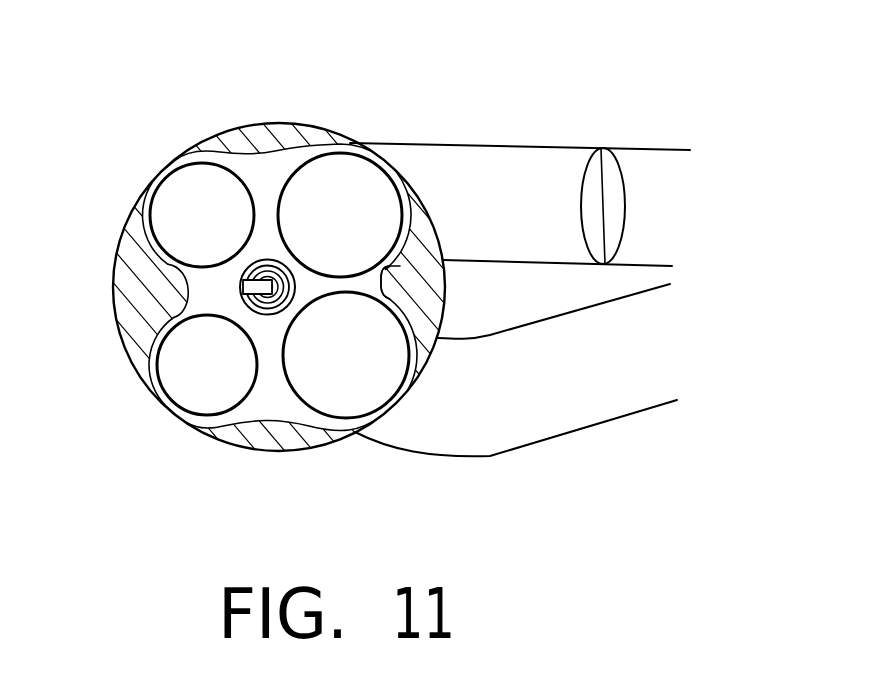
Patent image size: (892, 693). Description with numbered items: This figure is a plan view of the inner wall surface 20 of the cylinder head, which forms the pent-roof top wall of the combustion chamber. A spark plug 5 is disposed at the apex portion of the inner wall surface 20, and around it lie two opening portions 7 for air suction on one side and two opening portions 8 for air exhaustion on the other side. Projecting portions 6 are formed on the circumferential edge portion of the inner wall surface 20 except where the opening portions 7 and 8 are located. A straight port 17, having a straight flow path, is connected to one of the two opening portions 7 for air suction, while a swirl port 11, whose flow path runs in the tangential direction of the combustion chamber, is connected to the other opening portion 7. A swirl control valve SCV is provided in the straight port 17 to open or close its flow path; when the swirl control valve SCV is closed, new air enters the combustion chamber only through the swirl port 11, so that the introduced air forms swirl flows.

The spark plug 5 is at (243, 282).
The projecting portions 6 is at (432, 282).
The opening portions for air suction 7 is at (355, 183).
The opening portions for air exhaustion 8 is at (187, 198).
The swirl port 11 is at (553, 408).
The straight port 17 is at (530, 168).
The inner wall surface 20 is at (313, 129).
The swirl control valve SCV is at (625, 207).